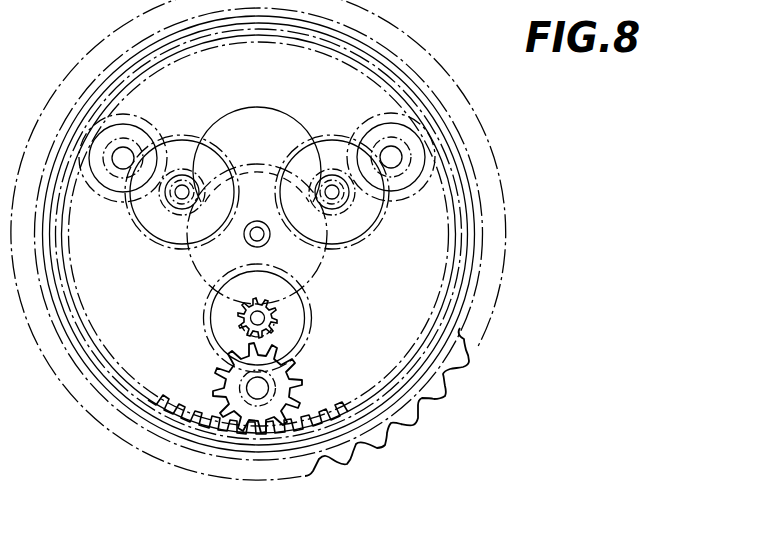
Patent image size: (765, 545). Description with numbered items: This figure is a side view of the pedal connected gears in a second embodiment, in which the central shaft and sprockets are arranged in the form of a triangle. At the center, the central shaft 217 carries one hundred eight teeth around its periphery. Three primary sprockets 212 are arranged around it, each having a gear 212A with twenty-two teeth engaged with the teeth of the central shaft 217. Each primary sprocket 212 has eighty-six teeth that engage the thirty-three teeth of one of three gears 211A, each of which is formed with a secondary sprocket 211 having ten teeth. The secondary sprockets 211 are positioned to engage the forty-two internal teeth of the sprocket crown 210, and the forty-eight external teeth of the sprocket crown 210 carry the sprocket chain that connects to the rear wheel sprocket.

The sprocket crown 210 is at (443, 391).
The secondary sprocket 211 is at (116, 200).
The gear 211A is at (403, 169).
The primary sprocket 212 is at (207, 139).
The gear 212A is at (348, 222).
The central shaft 217 is at (200, 265).